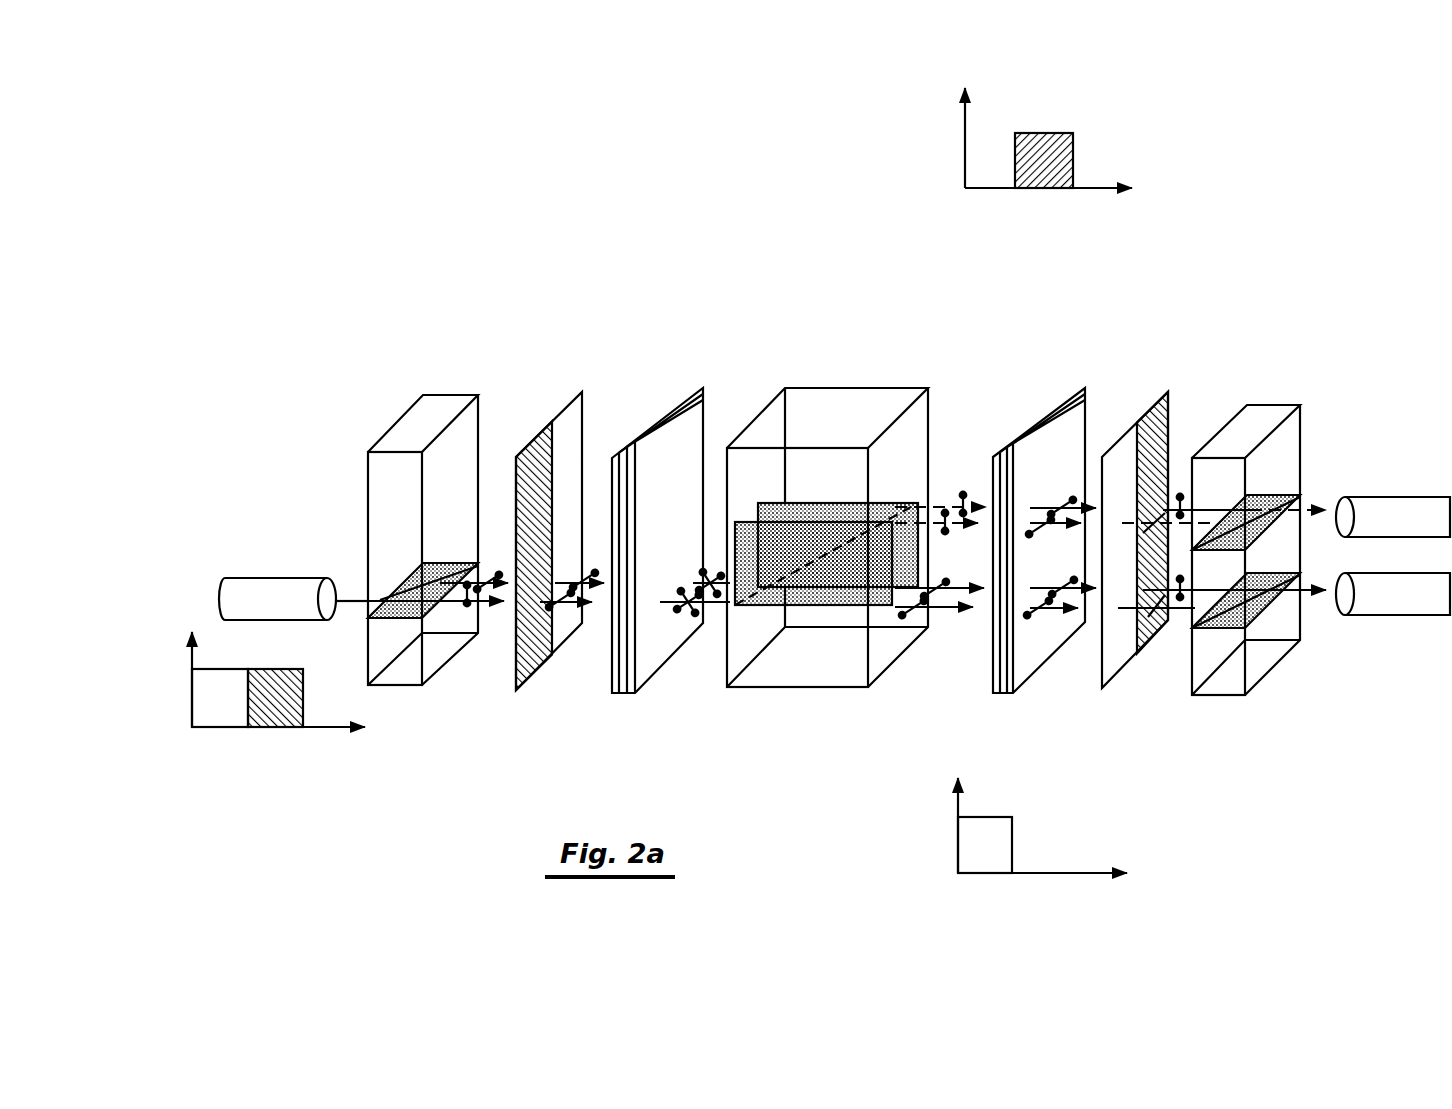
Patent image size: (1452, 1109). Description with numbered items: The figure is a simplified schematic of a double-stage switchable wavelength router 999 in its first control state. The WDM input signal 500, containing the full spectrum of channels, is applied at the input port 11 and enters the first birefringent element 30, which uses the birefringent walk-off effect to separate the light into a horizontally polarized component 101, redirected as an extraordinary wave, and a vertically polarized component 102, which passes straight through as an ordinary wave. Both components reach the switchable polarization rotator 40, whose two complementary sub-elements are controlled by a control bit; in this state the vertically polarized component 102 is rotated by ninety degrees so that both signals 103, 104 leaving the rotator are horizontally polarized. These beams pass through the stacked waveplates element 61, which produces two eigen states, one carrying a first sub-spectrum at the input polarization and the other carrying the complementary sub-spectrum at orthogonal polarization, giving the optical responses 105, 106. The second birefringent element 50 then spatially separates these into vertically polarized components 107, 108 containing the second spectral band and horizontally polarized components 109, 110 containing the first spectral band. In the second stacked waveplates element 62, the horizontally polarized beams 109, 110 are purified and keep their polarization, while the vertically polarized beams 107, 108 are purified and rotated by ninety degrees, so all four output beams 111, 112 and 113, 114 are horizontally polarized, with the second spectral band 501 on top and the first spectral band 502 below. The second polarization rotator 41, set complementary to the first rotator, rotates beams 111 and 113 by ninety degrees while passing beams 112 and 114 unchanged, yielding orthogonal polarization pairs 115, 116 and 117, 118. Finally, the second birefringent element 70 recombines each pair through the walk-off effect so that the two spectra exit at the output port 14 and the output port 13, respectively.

The double-stage wavelength router 999 is at (546, 234).
The input port 11 is at (293, 554).
The first birefringent element 30 is at (448, 394).
The switchable polarization rotator 40 is at (598, 382).
The stacked waveplates element 61 is at (698, 426).
The second birefringent element 50 is at (835, 415).
The second stacked waveplates element 62 is at (1043, 432).
The second polarization rotator 41 is at (1158, 404).
The second birefringent element 70 is at (1263, 423).
The output port 13 is at (1393, 611).
The output port 14 is at (1393, 473).
The WDM input signal 500 is at (249, 695).
The second spectral band 501 is at (1015, 154).
The first spectral band 502 is at (1010, 843).
The horizontally polarized component 101 is at (503, 556).
The vertically polarized component 102 is at (480, 612).
The signal exiting rotator 103 is at (588, 570).
The signal exiting rotator 104 is at (582, 614).
The optical response 105 is at (696, 574).
The optical response 106 is at (700, 614).
The vertically polarized component 107 is at (967, 490).
The vertically polarized component 108 is at (932, 530).
The horizontally polarized component 109 is at (985, 598).
The horizontally polarized component 110 is at (948, 626).
The output beam of second stacked waveplates element 111 is at (1070, 500).
The output beam of second stacked waveplates element 112 is at (1058, 522).
The output beam of second stacked waveplates element 113 is at (1088, 596).
The output beam of second stacked waveplates element 114 is at (1052, 614).
The orthogonal polarization pair beam 115 is at (1178, 494).
The orthogonal polarization pair beam 116 is at (1186, 502).
The orthogonal polarization pair beam 117 is at (1180, 602).
The orthogonal polarization pair beam 118 is at (1163, 613).